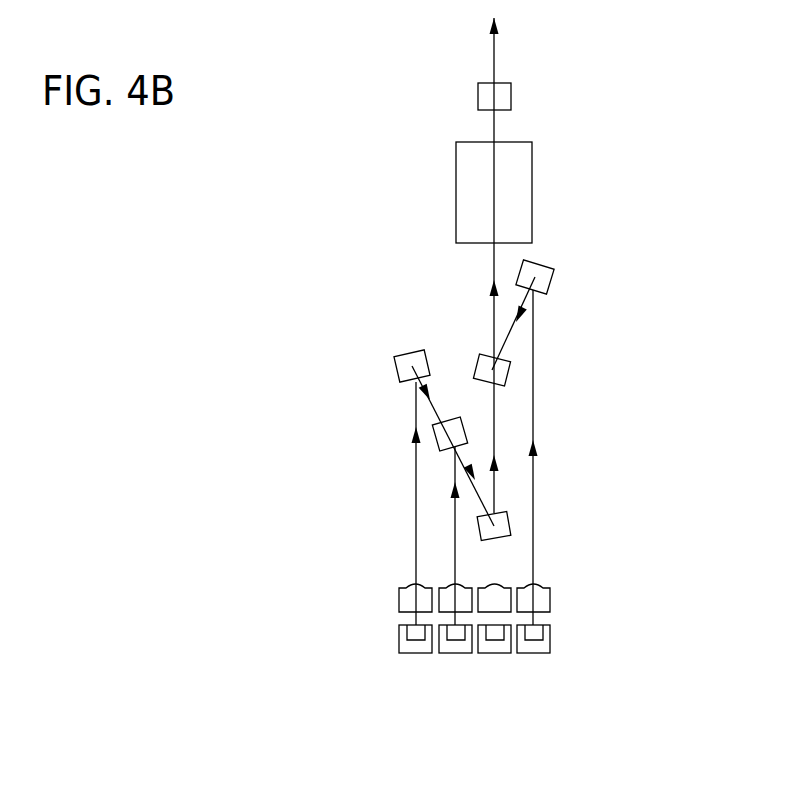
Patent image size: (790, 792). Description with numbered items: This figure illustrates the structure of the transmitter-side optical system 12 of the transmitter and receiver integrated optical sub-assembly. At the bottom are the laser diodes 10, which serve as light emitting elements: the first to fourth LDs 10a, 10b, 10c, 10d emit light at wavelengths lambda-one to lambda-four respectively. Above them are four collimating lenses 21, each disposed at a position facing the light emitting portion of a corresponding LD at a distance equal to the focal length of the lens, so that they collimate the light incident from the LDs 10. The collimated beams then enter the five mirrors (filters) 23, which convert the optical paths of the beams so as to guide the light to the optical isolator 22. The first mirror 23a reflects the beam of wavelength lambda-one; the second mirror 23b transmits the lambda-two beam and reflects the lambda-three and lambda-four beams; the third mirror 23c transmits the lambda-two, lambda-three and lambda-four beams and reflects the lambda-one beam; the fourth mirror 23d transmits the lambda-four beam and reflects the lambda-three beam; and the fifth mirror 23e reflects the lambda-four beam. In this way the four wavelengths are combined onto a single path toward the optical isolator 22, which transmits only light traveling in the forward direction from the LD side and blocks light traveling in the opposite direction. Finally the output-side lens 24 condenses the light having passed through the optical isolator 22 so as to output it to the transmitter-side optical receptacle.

The transmitter-side optical system 12 is at (477, 370).
The output-side lens 24 is at (511, 97).
The optical isolator 22 is at (532, 173).
The mirrors 23 is at (480, 381).
The first mirror 23a is at (542, 265).
The second mirror 23b is at (512, 525).
The third mirror 23c is at (498, 357).
The fourth mirror 23d is at (435, 440).
The fifth mirror 23e is at (395, 357).
The collimating lenses 21 is at (399, 598).
The laser diodes 10 is at (506, 663).
The first LD 10a is at (533, 653).
The second LD 10b is at (494, 653).
The third LD 10c is at (455, 653).
The fourth LD 10d is at (416, 653).